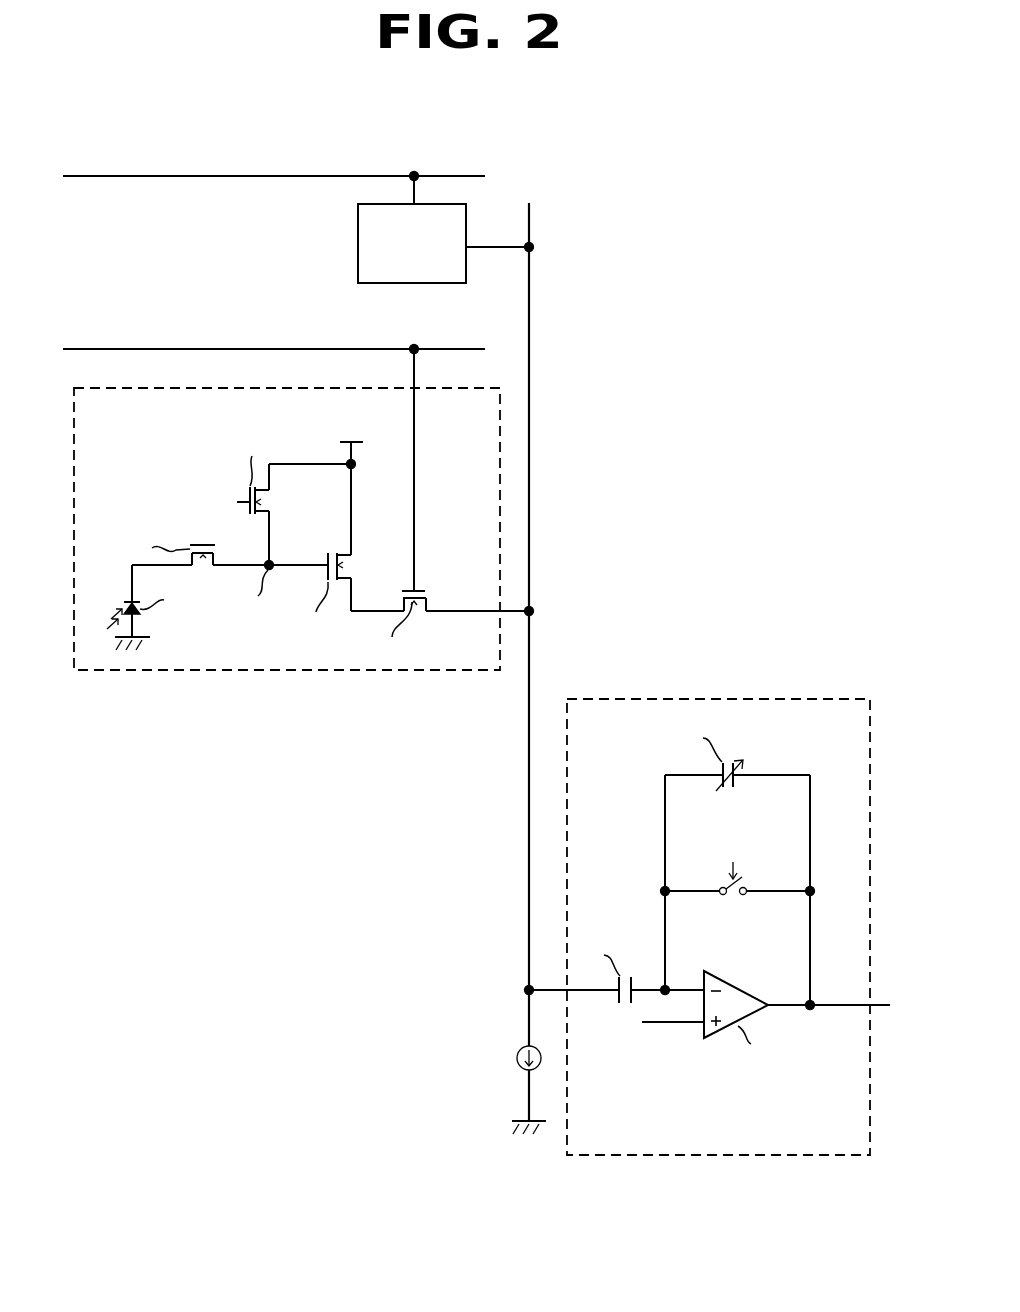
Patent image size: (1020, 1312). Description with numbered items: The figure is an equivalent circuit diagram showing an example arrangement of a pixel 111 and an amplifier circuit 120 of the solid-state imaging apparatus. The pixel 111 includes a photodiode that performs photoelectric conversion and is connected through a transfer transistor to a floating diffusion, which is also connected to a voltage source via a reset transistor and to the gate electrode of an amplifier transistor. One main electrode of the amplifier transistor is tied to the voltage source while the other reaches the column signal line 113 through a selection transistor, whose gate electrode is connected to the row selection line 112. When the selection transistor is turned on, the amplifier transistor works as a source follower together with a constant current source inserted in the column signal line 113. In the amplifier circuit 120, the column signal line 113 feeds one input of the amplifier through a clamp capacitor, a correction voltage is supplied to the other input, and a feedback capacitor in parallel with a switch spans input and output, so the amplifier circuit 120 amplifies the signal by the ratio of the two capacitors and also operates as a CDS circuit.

The pixel 111 is at (358, 247).
The row selection line 112 is at (196, 172).
The column signal line 113 is at (531, 345).
The amplifier circuit 120 is at (690, 698).